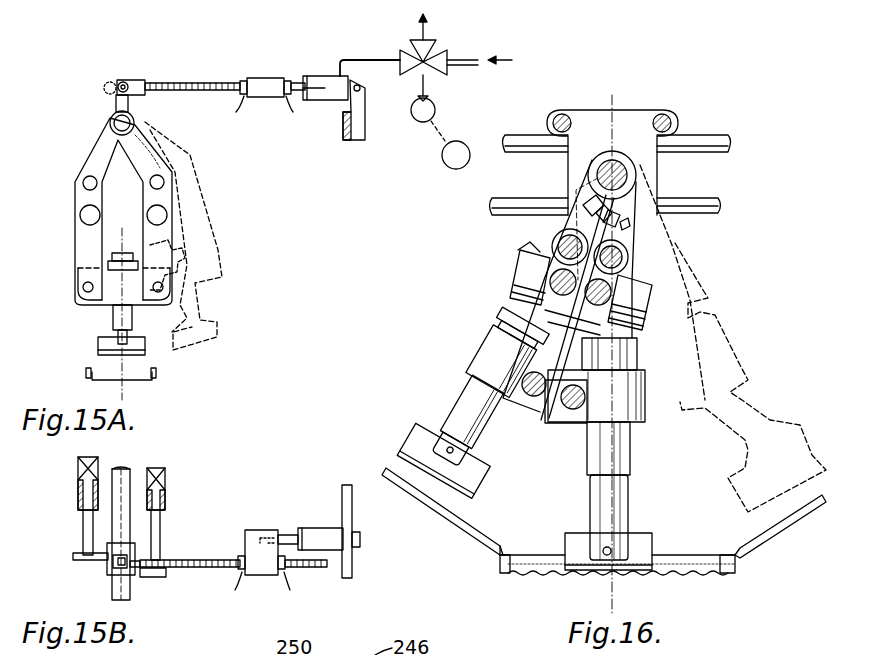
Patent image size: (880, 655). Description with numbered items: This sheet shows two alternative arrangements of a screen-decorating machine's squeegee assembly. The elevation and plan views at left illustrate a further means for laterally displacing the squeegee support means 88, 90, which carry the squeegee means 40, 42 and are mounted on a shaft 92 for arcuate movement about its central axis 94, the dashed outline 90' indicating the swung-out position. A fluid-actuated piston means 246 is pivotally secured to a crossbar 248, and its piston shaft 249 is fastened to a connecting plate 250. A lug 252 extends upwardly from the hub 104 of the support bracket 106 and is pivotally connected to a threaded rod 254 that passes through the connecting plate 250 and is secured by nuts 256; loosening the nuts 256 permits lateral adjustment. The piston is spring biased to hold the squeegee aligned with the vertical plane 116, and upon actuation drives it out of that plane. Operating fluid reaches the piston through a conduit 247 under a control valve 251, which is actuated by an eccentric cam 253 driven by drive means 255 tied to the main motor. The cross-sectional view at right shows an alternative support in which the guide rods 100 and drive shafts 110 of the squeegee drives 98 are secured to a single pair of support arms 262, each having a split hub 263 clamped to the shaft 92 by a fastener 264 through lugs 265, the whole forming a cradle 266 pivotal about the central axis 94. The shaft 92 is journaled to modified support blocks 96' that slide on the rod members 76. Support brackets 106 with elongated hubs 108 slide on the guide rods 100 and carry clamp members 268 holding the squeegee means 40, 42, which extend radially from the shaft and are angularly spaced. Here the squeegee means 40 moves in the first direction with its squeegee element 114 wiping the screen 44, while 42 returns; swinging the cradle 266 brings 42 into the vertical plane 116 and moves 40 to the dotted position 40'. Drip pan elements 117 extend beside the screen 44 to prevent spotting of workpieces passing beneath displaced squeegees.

In FIG. 16, the squeegee means 40 is at (632, 491).
In FIG. 16, the displaced position of squeegee means 40' is at (750, 377).
In FIG. 15A, the squeegee means 42 is at (112, 316).
In FIG. 16, the squeegee means 42 is at (465, 398).
In FIG. 15A, the screen 44 is at (148, 378).
In FIG. 16, the screen 44 is at (686, 580).
In FIG. 16, the rod members 76 is at (720, 200).
In FIG. 15A, the squeegee support means 88 is at (72, 210).
In FIG. 15B, the squeegee support means 88 is at (72, 558).
In FIG. 15A, the squeegee support means 90 is at (183, 231).
In FIG. 15B, the squeegee support means 90 is at (167, 586).
In FIG. 15A, the displaced position of squeegee support means 90' is at (204, 236).
In FIG. 15A, the shaft 92 is at (110, 125).
In FIG. 15B, the shaft 92 is at (128, 468).
In FIG. 16, the shaft 92 is at (638, 172).
In FIG. 16, the central axis 94 is at (600, 172).
In FIG. 16, the support blocks 96' is at (637, 146).
In FIG. 16, the squeegee drive 98 is at (522, 259).
In FIG. 16, the guide rods 100 is at (620, 270).
In FIG. 15A, the hub 104 is at (112, 115).
In FIG. 15B, the hub 104 is at (108, 572).
In FIG. 15A, the support bracket 106 is at (170, 233).
In FIG. 15B, the support bracket 106 is at (168, 573).
In FIG. 16, the support bracket 106 is at (572, 326).
In FIG. 16, the elongated hub 108 is at (645, 225).
In FIG. 15B, the drive shaft 110 is at (78, 472).
In FIG. 16, the drive shaft 110 is at (550, 283).
In FIG. 16, the squeegee element 114 is at (478, 482).
In FIG. 15A, the vertical plane 116 is at (118, 380).
In FIG. 16, the vertical plane 116 is at (608, 585).
In FIG. 16, the drip pan elements 117 is at (462, 530).
In FIG. 15A, the fluid-actuated piston means 246 is at (328, 75).
In FIG. 15B, the fluid-actuated piston means 246 is at (320, 527).
In FIG. 15A, the conduit 247 is at (380, 68).
In FIG. 15A, the crossbar 248 is at (343, 128).
In FIG. 15B, the crossbar 248 is at (347, 484).
In FIG. 15B, the piston shaft 249 is at (288, 533).
In FIG. 15A, the connecting plate 250 is at (265, 80).
In FIG. 15B, the connecting plate 250 is at (252, 528).
In FIG. 15A, the control valve 251 is at (445, 53).
In FIG. 15A, the lug 252 is at (128, 100).
In FIG. 15B, the lug 252 is at (112, 566).
In FIG. 15A, the eccentric cam 253 is at (436, 110).
In FIG. 15A, the threaded rod 254 is at (195, 80).
In FIG. 15B, the threaded rod 254 is at (218, 543).
In FIG. 15A, the drive means 255 is at (442, 165).
In FIG. 15A, the nuts 256 is at (264, 112).
In FIG. 15B, the nuts 256 is at (262, 590).
In FIG. 16, the support arms 262 is at (648, 228).
In FIG. 16, the split hub 263 is at (600, 150).
In FIG. 16, the fastener 264 is at (585, 200).
In FIG. 16, the lugs 265 is at (605, 215).
In FIG. 16, the cradle 266 is at (520, 244).
In FIG. 16, the clamp members 268 is at (484, 343).